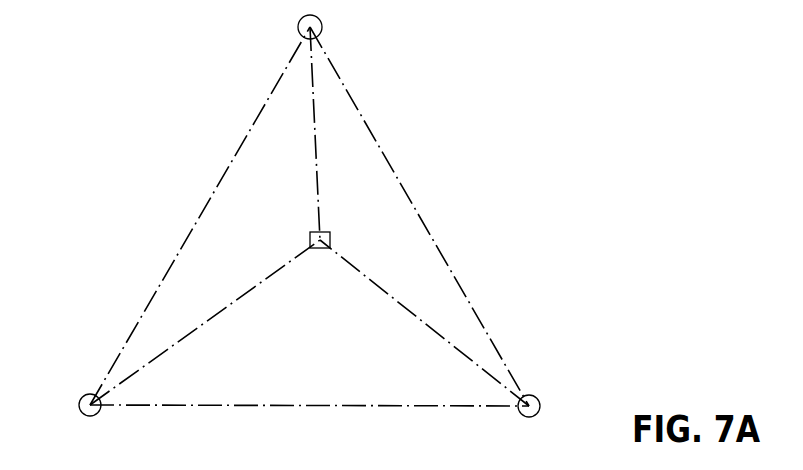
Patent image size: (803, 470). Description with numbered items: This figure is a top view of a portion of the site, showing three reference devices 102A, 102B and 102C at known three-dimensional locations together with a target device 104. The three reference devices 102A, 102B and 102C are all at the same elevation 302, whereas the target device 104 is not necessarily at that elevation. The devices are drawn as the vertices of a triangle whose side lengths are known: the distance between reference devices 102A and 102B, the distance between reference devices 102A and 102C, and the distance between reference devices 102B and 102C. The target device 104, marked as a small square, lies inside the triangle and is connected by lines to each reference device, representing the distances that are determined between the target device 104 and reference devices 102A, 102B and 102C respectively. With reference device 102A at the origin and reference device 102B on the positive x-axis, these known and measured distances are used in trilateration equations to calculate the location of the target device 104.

The elevation 302 is at (173, 43).
The reference device 102A is at (83, 397).
The reference device 102B is at (539, 398).
The reference device 102C is at (322, 25).
The target device 104 is at (332, 238).